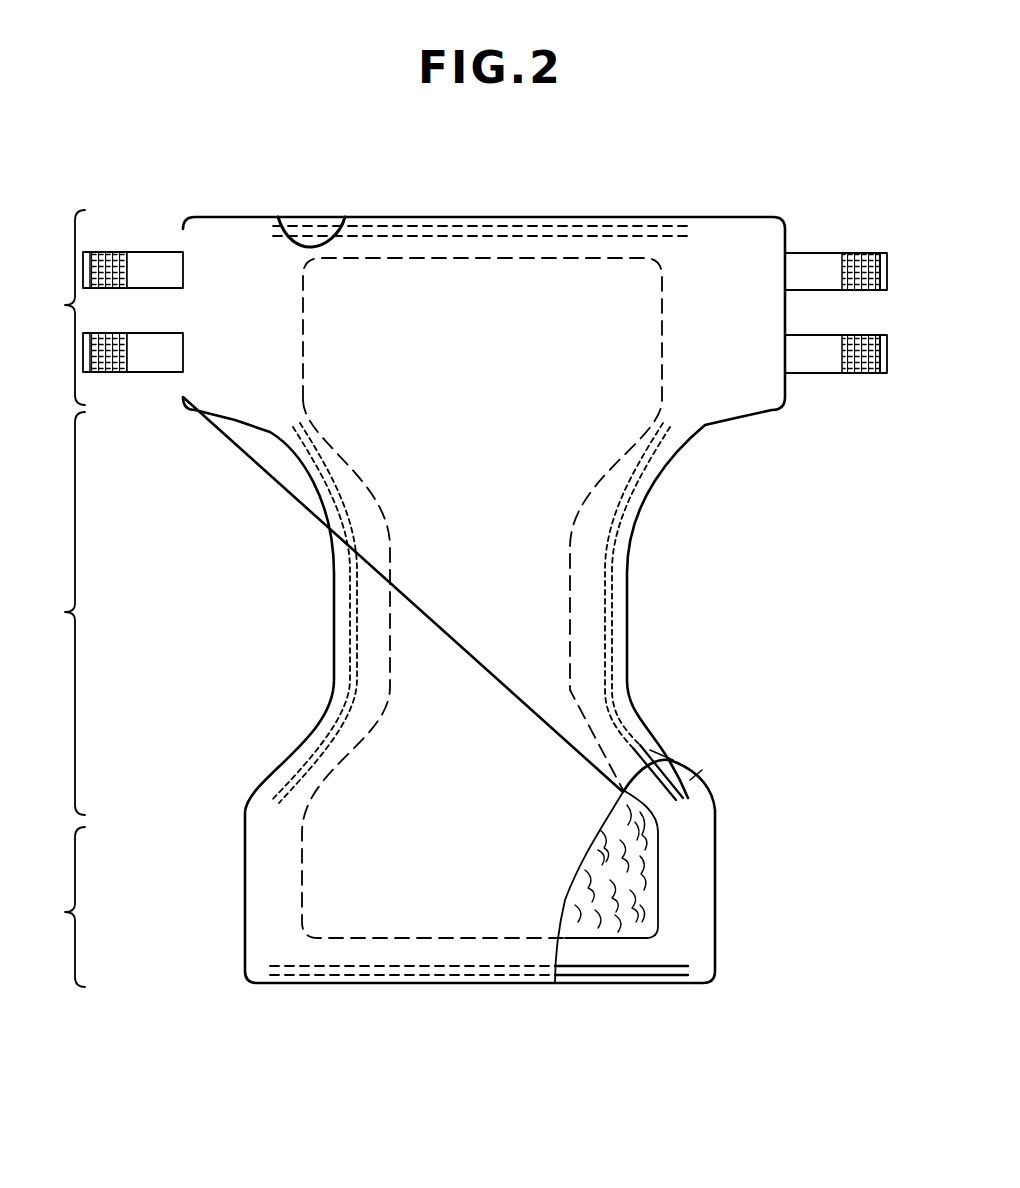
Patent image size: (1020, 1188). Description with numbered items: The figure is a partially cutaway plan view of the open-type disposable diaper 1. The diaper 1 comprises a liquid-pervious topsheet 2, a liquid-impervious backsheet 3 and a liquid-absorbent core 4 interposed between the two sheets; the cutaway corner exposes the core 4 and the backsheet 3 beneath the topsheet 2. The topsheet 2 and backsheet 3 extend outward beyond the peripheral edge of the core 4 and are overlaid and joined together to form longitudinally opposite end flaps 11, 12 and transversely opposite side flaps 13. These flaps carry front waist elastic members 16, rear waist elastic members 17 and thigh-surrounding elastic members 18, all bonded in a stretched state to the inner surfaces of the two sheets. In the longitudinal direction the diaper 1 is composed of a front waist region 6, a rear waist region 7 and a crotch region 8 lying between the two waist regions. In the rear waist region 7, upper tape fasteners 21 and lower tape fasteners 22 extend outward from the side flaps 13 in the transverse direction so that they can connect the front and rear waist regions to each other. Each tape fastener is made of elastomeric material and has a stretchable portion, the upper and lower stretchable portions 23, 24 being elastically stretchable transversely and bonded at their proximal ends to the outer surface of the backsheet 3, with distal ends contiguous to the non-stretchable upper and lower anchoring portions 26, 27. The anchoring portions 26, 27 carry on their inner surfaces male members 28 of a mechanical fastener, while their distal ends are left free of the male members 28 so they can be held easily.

The diaper 1 is at (670, 186).
The topsheet 2 is at (627, 757).
The backsheet 3 is at (703, 938).
The core 4 is at (655, 847).
The front waist region 6 is at (62, 907).
The rear waist region 7 is at (62, 307).
The crotch region 8 is at (62, 613).
The end flap 11 is at (421, 965).
The end flap 12 is at (470, 243).
The side flaps 13 is at (297, 413).
The front waist elastic members 16 is at (617, 976).
The rear waist elastic members 17 is at (318, 236).
The thigh-surrounding elastic members 18 is at (690, 779).
The upper tape fasteners 21 is at (808, 292).
The lower tape fasteners 22 is at (812, 373).
The upper stretchable portion 23 is at (803, 258).
The lower stretchable portion 24 is at (796, 363).
The upper anchoring portion 26 is at (858, 270).
The lower anchoring portion 27 is at (866, 332).
The male members 28 is at (862, 282).